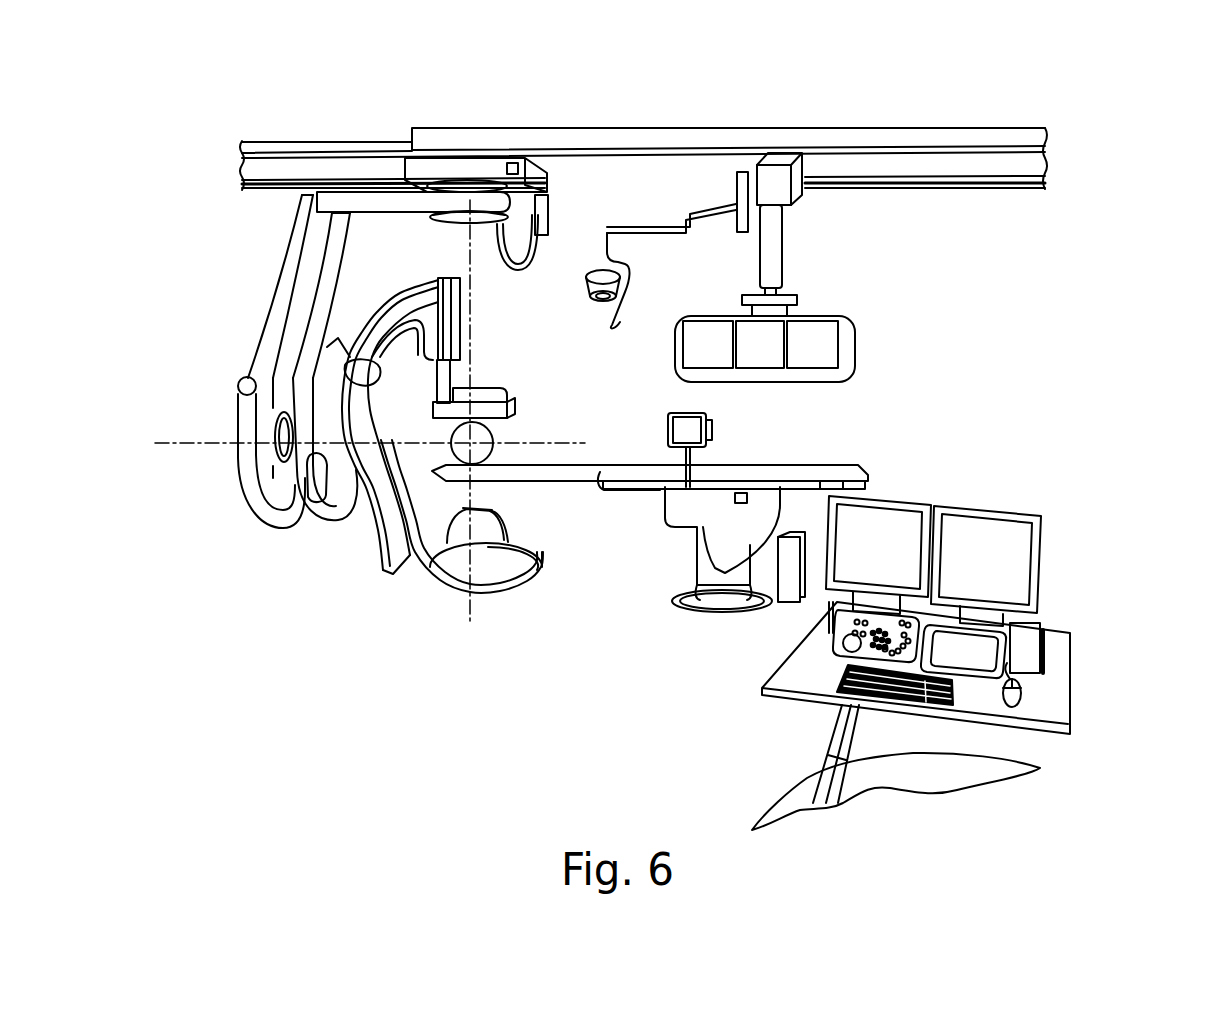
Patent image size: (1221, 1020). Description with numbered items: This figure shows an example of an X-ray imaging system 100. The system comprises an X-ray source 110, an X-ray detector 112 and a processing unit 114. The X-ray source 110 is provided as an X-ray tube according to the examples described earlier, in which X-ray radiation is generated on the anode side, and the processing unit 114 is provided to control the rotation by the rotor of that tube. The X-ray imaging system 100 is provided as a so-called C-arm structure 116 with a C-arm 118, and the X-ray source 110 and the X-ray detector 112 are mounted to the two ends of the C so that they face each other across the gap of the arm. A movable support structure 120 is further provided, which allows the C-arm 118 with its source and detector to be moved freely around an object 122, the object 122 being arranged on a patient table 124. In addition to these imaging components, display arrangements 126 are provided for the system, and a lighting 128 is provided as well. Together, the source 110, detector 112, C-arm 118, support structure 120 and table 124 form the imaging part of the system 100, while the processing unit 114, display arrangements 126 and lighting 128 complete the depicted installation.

The X-ray imaging system 100 is at (943, 321).
The X-ray source 110 is at (463, 532).
The X-ray detector 112 is at (516, 395).
The processing unit 114 is at (1052, 564).
The C-arm structure 116 is at (276, 274).
The C-arm 118 is at (352, 524).
The movable support structure 120 is at (258, 353).
The object 122 is at (468, 449).
The patient table 124 is at (853, 476).
The display arrangements 126 is at (816, 318).
The lighting 128 is at (598, 282).